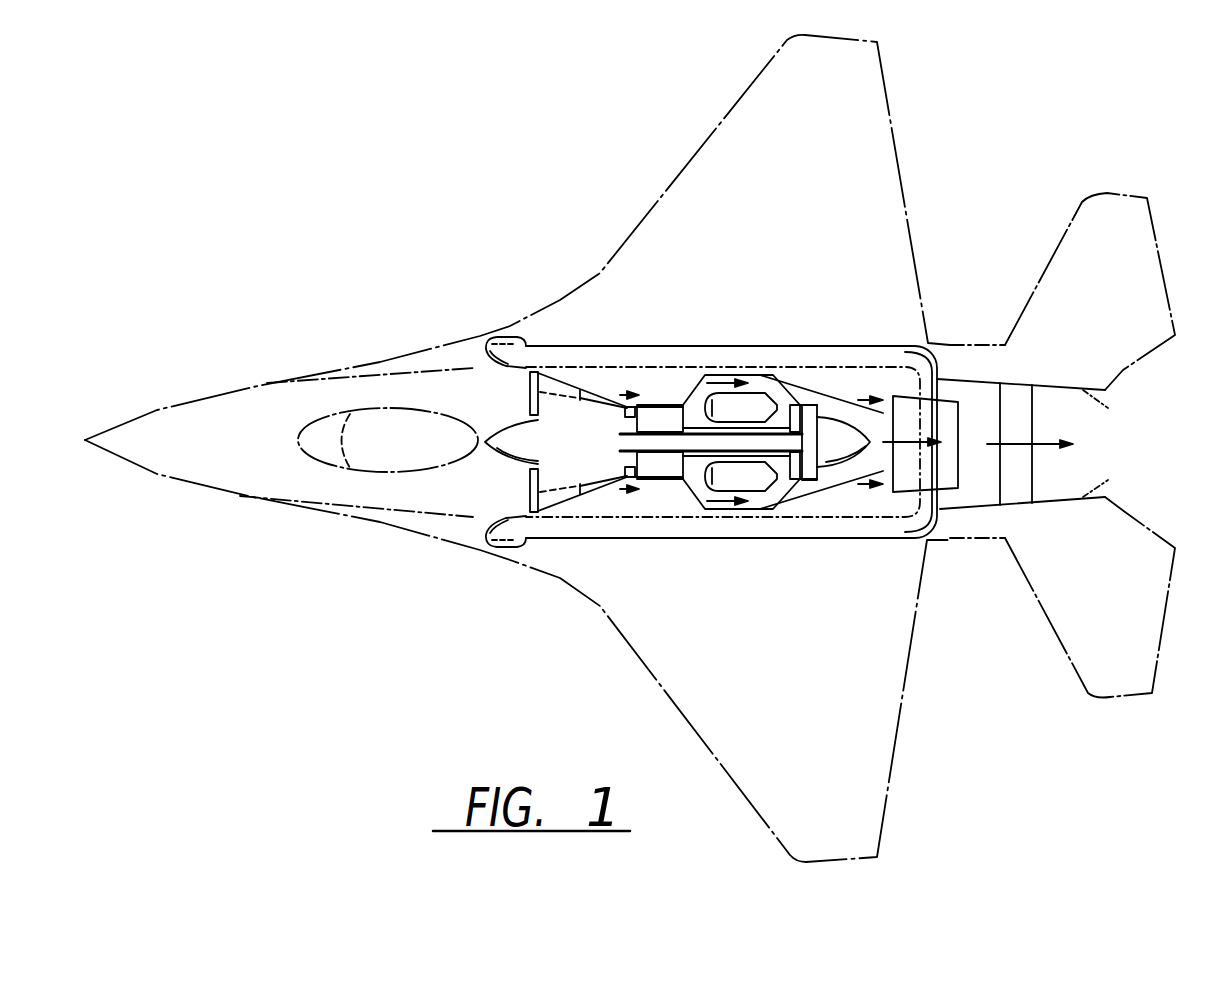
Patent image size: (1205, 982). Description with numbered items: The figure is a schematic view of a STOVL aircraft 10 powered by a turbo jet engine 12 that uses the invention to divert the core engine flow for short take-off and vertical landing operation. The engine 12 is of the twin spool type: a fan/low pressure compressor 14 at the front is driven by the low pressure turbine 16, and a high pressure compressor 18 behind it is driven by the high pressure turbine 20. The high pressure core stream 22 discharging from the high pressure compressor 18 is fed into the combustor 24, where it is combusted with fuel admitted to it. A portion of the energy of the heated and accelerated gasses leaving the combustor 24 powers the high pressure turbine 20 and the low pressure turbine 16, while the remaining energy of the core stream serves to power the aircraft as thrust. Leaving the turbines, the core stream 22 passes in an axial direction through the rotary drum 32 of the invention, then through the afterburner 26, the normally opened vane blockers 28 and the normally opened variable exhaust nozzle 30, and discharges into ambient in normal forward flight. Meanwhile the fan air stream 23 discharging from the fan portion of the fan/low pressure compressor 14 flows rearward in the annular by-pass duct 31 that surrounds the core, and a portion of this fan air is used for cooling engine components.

The STOVL aircraft 10 is at (424, 548).
The turbo jet engine 12 is at (670, 375).
The fan/low pressure compressor 14 is at (580, 398).
The low pressure turbine 16 is at (812, 412).
The high pressure compressor 18 is at (667, 420).
The high pressure turbine 20 is at (795, 405).
The high pressure core stream 22 is at (1035, 448).
The fan air stream 23 is at (722, 504).
The combustor 24 is at (747, 397).
The afterburner 26 is at (983, 508).
The vane blockers 28 is at (1013, 508).
The variable exhaust nozzle 30 is at (1105, 498).
The annular by-pass duct 31 is at (790, 500).
The rotary drum 32 is at (950, 386).